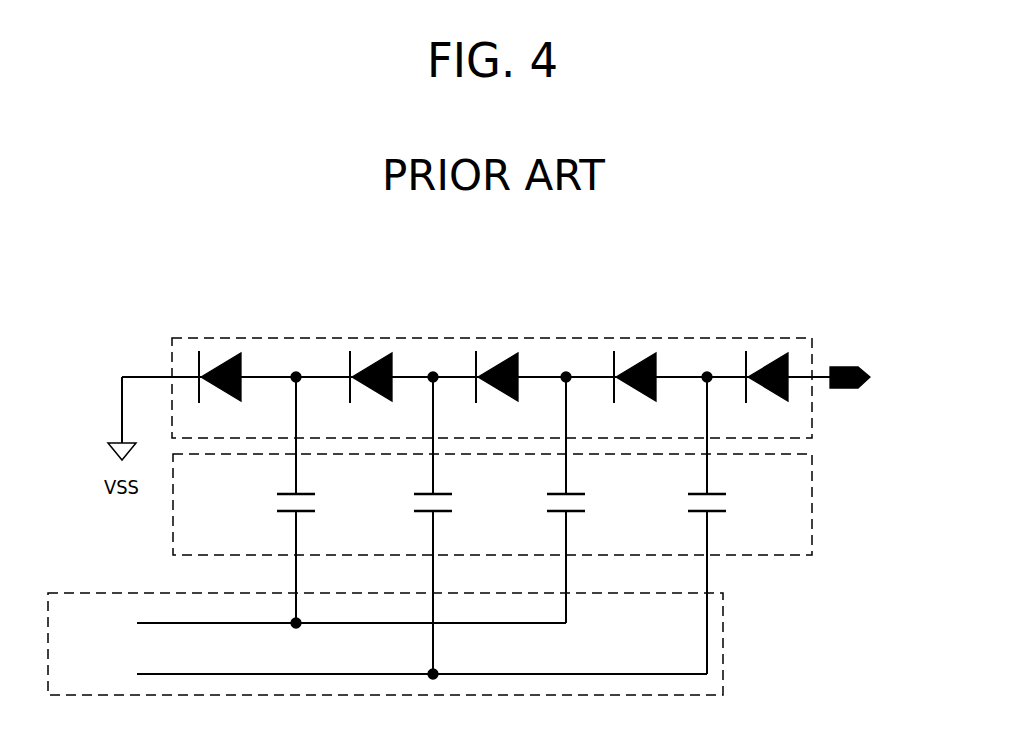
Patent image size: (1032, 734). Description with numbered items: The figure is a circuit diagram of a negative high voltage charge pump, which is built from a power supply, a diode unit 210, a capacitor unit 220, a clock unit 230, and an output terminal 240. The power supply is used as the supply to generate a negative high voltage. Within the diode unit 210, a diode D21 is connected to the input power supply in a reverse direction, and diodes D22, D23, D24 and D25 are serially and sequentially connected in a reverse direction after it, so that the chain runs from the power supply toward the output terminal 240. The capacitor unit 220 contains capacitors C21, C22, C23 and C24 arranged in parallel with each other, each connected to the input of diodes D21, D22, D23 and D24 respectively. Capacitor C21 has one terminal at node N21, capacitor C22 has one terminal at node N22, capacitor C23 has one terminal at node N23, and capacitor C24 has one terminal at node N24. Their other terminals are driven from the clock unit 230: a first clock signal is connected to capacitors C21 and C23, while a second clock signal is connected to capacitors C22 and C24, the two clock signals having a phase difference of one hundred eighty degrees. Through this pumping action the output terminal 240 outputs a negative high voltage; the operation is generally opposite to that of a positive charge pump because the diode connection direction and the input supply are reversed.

The diode unit 210 is at (650, 337).
The capacitor unit 220 is at (815, 503).
The clock unit 230 is at (725, 641).
The output terminal VOUT 240 is at (842, 362).
The diode D21 is at (220, 394).
The diode D22 is at (370, 394).
The diode D23 is at (497, 394).
The diode D24 is at (635, 394).
The diode D25 is at (767, 394).
The capacitor C21 is at (276, 504).
The capacitor C22 is at (409, 504).
The capacitor C23 is at (542, 504).
The capacitor C24 is at (684, 504).
The node N21 is at (292, 363).
The node N22 is at (435, 363).
The node N23 is at (569, 363).
The node N24 is at (709, 363).